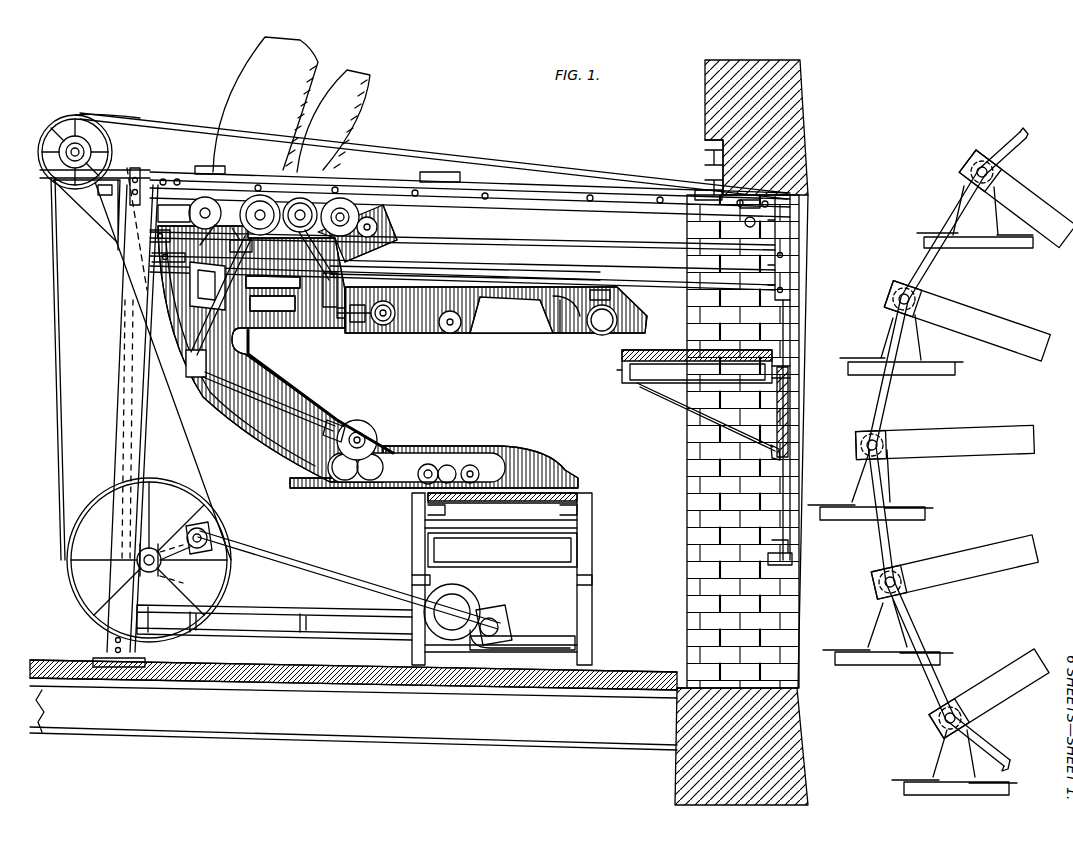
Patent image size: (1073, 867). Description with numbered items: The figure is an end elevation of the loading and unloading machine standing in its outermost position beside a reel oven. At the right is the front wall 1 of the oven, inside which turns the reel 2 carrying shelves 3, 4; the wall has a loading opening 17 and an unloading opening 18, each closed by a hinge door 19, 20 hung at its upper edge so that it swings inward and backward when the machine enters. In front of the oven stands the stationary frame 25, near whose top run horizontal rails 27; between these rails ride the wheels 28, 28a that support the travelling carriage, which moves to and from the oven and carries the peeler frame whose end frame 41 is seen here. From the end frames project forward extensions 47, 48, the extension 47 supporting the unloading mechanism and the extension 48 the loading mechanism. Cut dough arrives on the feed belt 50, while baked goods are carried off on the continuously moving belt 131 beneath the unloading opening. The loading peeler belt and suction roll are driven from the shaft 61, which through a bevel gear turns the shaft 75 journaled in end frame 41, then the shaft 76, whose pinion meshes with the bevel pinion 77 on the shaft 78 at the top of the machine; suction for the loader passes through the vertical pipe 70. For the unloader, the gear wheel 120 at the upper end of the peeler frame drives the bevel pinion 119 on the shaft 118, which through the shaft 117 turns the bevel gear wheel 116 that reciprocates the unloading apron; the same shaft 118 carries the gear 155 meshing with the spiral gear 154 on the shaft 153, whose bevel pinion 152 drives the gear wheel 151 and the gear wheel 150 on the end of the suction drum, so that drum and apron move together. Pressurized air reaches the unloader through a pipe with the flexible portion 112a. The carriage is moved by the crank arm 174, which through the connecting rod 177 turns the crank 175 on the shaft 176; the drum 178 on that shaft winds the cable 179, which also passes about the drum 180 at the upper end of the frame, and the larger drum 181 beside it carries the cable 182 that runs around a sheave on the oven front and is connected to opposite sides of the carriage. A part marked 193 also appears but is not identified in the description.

The front wall 1 is at (797, 602).
The reel 2 is at (975, 441).
The shelf 3 is at (855, 512).
The shelf 4 is at (934, 372).
The loading opening 17 is at (790, 472).
The unloading opening 18 is at (797, 326).
The hinge door 19 is at (790, 490).
The hinge door 20 is at (790, 347).
The frame 25 is at (120, 317).
The horizontal rails 27 is at (513, 220).
The wheels 28 is at (195, 212).
The wheels 28a is at (376, 222).
The end frame 41 is at (250, 436).
The forward extension 47 is at (445, 332).
The forward extension 48 is at (430, 446).
The feed belt 50 is at (570, 495).
The shaft 61 is at (362, 430).
The vertical pipe 70 is at (285, 380).
The shaft 75 is at (306, 403).
The shaft 76 is at (252, 346).
The bevel pinion 77 is at (250, 200).
The shaft 78 is at (260, 195).
The flexible portion 112a is at (343, 108).
The bevel gear wheel 116 is at (386, 326).
The shaft 117 is at (363, 322).
The shaft 118 is at (300, 282).
The bevel pinion 119 is at (352, 195).
The gear wheel 120 is at (299, 198).
The belt 131 is at (636, 356).
The gear wheel 150 is at (584, 336).
The gear wheel 151 is at (560, 336).
The bevel pinion 152 is at (553, 334).
The shaft 153 is at (487, 335).
The spiral gear 154 is at (372, 277).
The gear 155 is at (305, 302).
The crank arm 174 is at (471, 613).
The crank 175 is at (193, 552).
The shaft 176 is at (165, 572).
The connecting rod 177 is at (292, 571).
The drum 178 is at (155, 480).
The cable 179 is at (61, 379).
The drum 180 is at (52, 140).
The larger drum 181 is at (100, 137).
The cable 182 is at (420, 163).
The block 193 is at (740, 204).